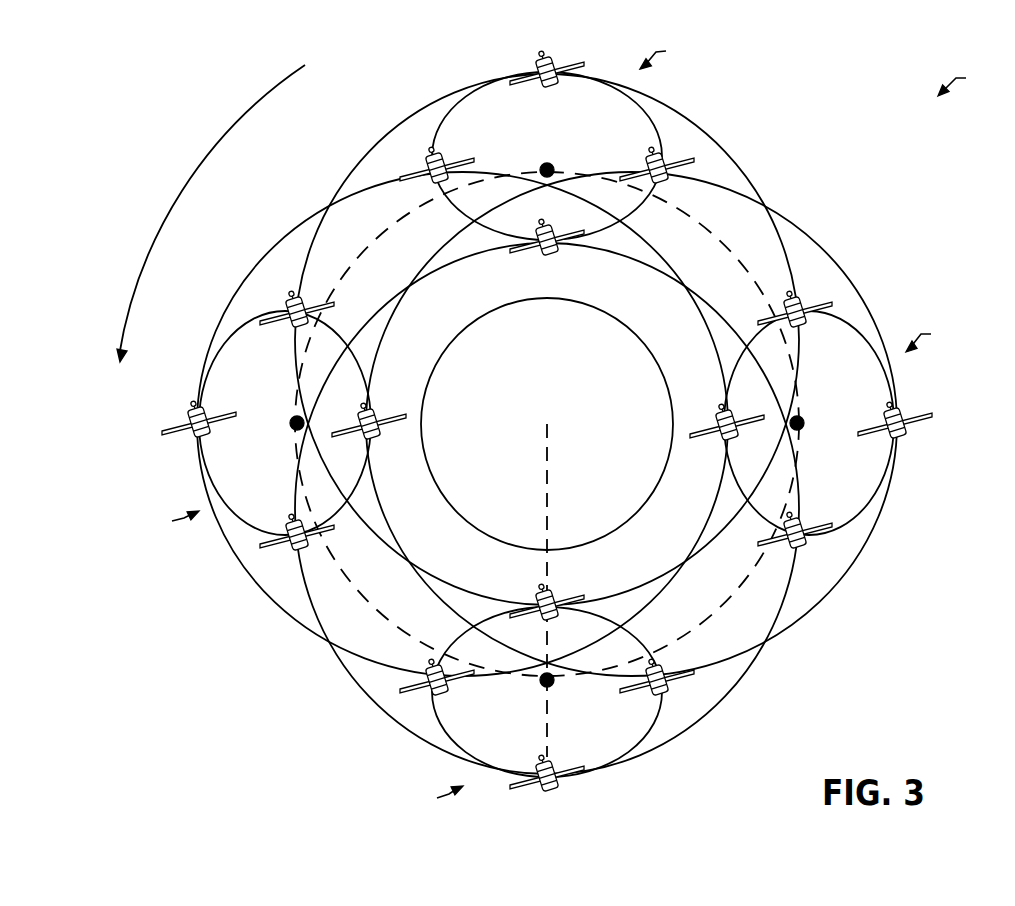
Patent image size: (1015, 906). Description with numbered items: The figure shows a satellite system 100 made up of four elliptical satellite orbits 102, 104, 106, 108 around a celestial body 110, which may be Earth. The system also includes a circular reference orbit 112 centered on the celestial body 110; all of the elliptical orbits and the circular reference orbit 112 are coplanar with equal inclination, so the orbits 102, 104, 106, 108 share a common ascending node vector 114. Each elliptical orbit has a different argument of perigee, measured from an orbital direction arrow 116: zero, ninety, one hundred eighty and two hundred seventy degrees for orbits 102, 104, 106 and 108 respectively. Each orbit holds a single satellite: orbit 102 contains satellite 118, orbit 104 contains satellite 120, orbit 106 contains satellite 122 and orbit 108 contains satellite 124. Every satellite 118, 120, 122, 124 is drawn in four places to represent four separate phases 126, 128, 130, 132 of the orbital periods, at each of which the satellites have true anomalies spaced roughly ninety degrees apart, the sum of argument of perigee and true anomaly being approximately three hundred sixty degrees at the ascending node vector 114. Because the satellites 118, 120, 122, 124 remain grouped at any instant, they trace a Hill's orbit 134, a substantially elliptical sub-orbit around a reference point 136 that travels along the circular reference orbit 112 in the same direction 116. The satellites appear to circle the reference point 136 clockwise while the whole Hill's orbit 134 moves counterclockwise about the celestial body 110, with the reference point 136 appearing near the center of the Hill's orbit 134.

The satellite system 100 is at (971, 82).
The satellite orbit 102 is at (692, 118).
The satellite orbit 104 is at (243, 290).
The satellite orbit 106 is at (395, 706).
The satellite orbit 108 is at (874, 525).
The celestial body 110 is at (513, 391).
The circular reference orbit 112 is at (715, 232).
The common ascending node vector 114 is at (553, 520).
The orbital direction arrow 116 is at (168, 196).
The satellite 118 is at (556, 60).
The satellite 120 is at (447, 158).
The satellite 122 is at (561, 250).
The satellite 124 is at (666, 158).
The phase 126 is at (672, 55).
The phase 128 is at (166, 523).
The phase 130 is at (431, 799).
The phase 132 is at (937, 338).
The Hill's orbit 134 is at (546, 131).
The reference point 136 is at (553, 167).